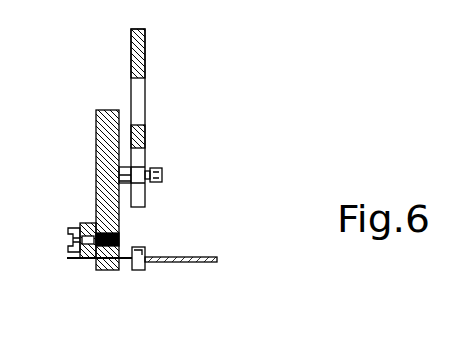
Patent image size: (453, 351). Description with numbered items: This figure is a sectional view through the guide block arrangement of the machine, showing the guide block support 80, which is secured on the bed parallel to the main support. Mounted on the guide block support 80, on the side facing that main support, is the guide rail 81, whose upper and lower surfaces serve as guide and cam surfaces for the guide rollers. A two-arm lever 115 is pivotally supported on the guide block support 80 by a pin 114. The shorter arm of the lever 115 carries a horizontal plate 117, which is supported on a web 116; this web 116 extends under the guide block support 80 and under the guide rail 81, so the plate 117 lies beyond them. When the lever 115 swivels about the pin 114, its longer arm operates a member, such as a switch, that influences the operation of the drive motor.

The guide block support 80 is at (107, 148).
The guide rail 81 is at (138, 250).
The pin 114 is at (78, 255).
The two-arm lever 115 is at (83, 225).
The web 116 is at (138, 270).
The horizontal plate 117 is at (215, 265).